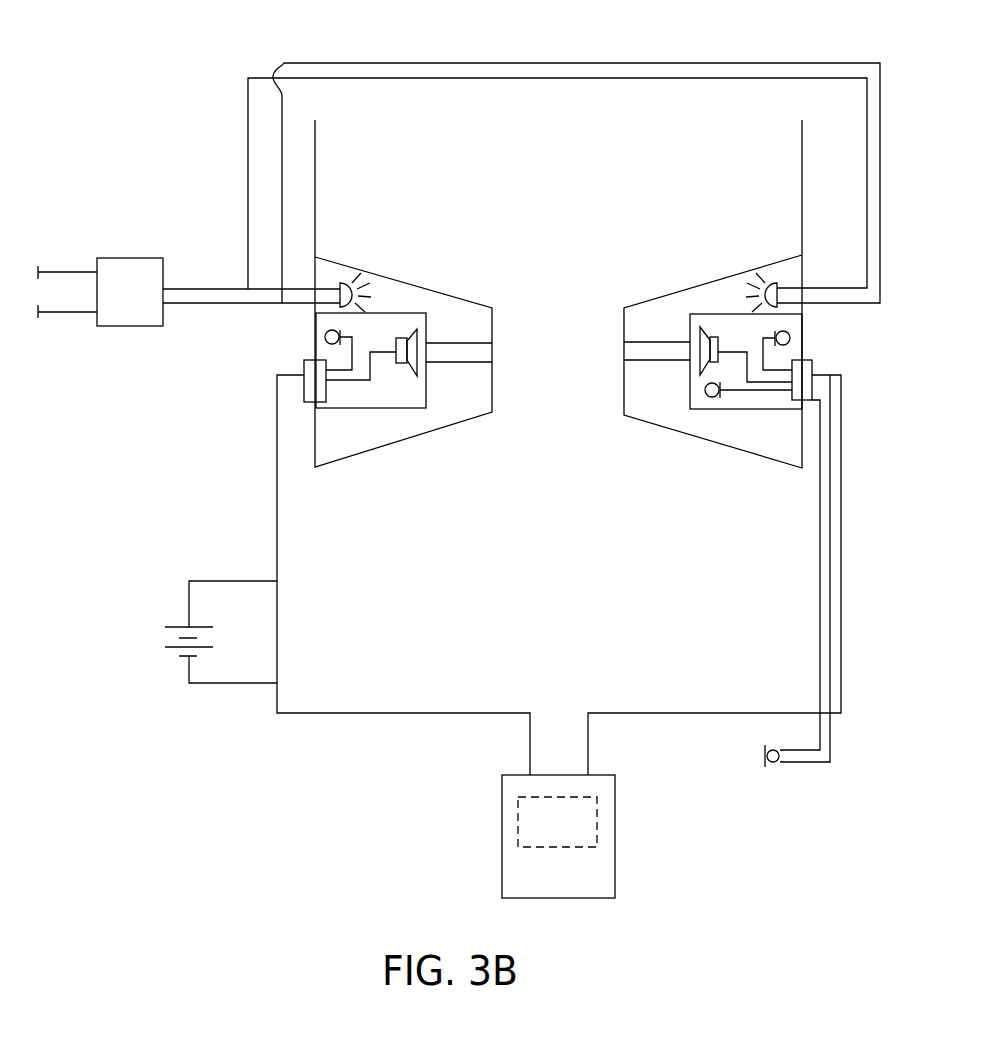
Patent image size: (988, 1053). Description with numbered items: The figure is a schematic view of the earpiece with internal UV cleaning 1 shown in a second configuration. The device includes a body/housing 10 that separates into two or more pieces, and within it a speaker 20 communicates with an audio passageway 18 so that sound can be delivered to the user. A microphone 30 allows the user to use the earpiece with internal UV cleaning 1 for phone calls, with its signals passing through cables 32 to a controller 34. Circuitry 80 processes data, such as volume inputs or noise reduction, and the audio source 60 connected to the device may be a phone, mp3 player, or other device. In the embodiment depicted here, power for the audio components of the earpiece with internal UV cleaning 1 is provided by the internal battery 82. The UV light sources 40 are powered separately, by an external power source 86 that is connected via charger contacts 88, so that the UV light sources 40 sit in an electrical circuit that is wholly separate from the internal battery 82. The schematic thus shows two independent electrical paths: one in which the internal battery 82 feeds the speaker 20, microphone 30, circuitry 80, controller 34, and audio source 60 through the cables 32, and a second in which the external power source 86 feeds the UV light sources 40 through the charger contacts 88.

The earpiece with internal UV cleaning 1 is at (212, 51).
The body/housing 10 is at (466, 428).
The audio passageway 18 is at (493, 350).
The speaker 20 is at (403, 340).
The microphone 30 is at (322, 336).
The cables 32 is at (352, 714).
The controller 34 is at (773, 766).
The UV light sources 40 is at (344, 283).
The audio source 60 is at (592, 871).
The circuitry 80 is at (303, 380).
The internal battery 82 is at (180, 627).
The external power source 86 is at (130, 258).
The charger contacts 88 is at (38, 272).